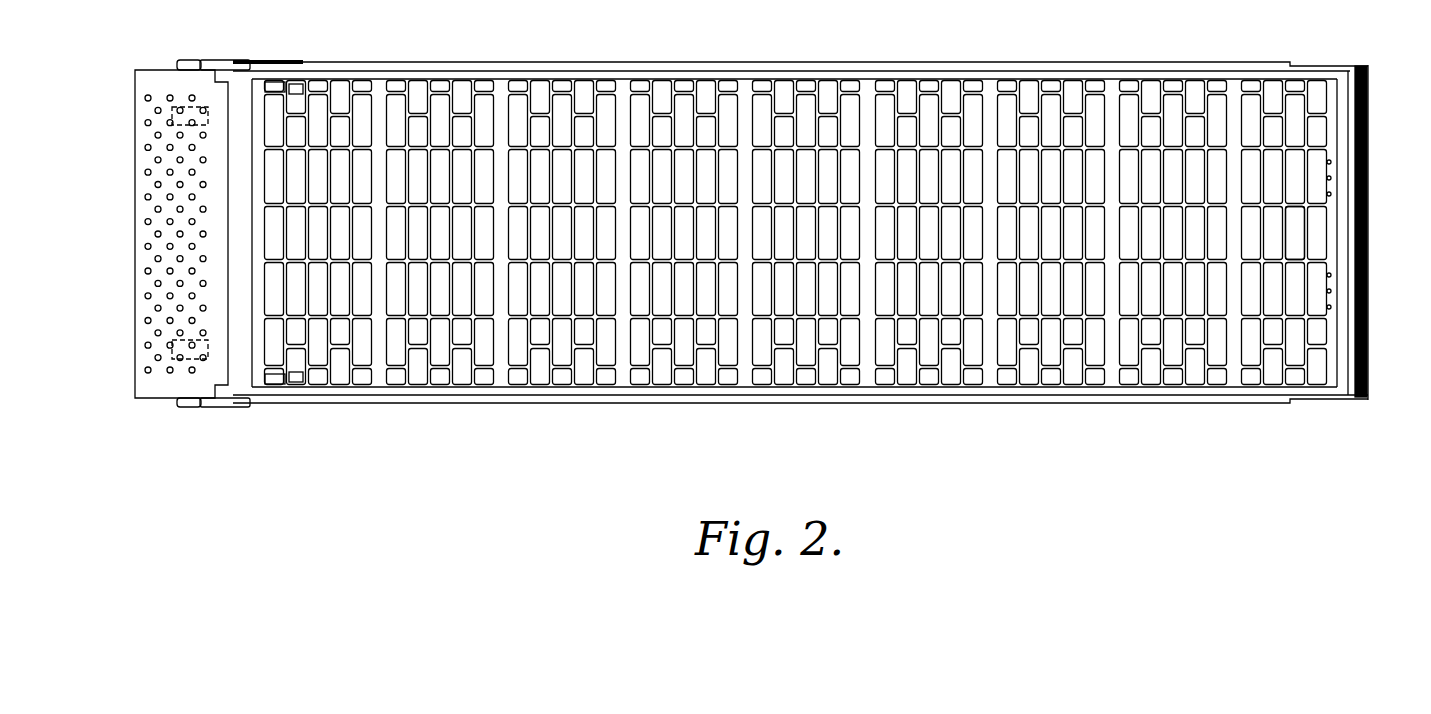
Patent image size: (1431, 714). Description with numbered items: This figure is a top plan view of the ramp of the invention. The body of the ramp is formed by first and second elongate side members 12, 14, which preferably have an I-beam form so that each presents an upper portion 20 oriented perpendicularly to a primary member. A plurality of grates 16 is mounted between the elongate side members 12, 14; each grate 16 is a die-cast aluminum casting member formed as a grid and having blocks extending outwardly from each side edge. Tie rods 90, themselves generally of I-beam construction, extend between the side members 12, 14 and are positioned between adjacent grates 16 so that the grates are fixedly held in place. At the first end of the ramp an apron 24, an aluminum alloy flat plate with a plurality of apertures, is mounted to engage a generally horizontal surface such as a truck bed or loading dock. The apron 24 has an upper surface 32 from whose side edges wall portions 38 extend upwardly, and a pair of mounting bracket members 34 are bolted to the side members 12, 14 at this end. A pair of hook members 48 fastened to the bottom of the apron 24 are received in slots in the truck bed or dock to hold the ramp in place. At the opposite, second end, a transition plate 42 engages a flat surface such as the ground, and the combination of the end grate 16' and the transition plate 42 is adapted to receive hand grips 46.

The first elongate side member 12 is at (698, 393).
The second elongate side member 14 is at (533, 62).
The grate 16 is at (624, 206).
The grate at second end 16' is at (1357, 232).
The upper portion 20 is at (667, 68).
The apron 24 is at (150, 78).
The upper surface 32 is at (150, 207).
The mounting bracket member 34 is at (218, 62).
The wall portion 38 is at (163, 67).
The transition plate 42 is at (1342, 100).
The hand grip 46 is at (1332, 177).
The hook member 48 is at (172, 116).
The tie rod 90 is at (990, 380).